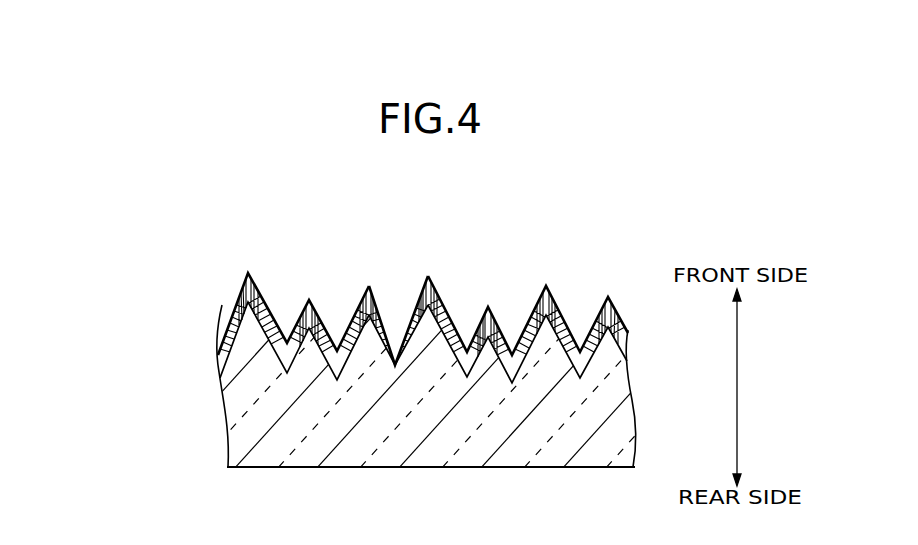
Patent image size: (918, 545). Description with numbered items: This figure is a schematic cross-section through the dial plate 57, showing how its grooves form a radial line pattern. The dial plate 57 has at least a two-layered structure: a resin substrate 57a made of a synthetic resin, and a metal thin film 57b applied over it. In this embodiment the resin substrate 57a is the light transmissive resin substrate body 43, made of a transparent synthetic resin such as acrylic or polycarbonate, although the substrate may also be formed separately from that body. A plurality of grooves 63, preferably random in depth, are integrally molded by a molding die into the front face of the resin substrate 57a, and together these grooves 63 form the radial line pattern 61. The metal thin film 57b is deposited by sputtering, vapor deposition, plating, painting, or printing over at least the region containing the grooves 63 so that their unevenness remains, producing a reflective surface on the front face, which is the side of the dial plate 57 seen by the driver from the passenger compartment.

The radial line pattern 61 is at (310, 240).
The grooves 63 is at (393, 335).
The dial plate 57 is at (125, 281).
The resin substrate 57a is at (437, 380).
The light transmissive resin substrate body 43 is at (234, 396).
The metal thin film 57b is at (243, 289).